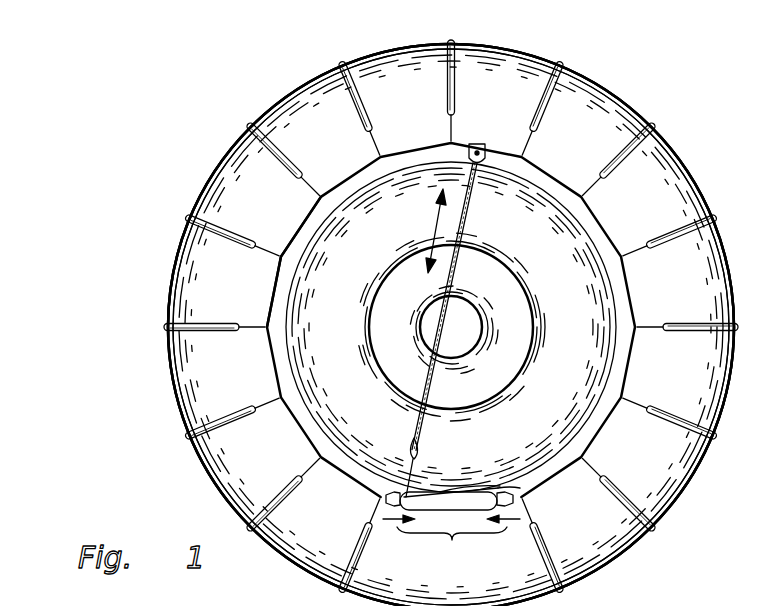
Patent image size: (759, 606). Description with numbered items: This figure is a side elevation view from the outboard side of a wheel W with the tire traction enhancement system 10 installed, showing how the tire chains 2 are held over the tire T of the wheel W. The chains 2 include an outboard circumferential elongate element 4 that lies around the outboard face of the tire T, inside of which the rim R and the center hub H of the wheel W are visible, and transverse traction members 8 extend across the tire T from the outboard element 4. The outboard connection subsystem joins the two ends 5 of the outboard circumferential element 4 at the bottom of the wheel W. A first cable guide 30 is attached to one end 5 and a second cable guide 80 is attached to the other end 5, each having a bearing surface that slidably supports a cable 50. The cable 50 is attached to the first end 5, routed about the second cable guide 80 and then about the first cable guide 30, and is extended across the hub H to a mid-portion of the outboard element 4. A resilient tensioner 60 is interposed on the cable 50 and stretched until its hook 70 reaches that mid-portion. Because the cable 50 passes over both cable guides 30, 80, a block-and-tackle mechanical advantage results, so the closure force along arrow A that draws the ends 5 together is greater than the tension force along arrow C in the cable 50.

The tire chains 2 is at (582, 57).
The outboard circumferential elongate element 4 is at (549, 164).
The ends of outboard circumferential element 5 is at (385, 503).
The transverse traction members 8 is at (652, 162).
The tire traction enhancement system 10 is at (640, 572).
The first cable guide 30 is at (393, 489).
The cable 50 is at (481, 491).
The resilient tensioner 60 is at (475, 222).
The hook 70 is at (481, 146).
The second cable guide 80 is at (520, 488).
The wheel W is at (200, 112).
The tire T is at (295, 108).
The rim R is at (305, 237).
The tension force arrow C is at (432, 230).
The hub H is at (421, 326).
The closure force arrow A is at (452, 540).